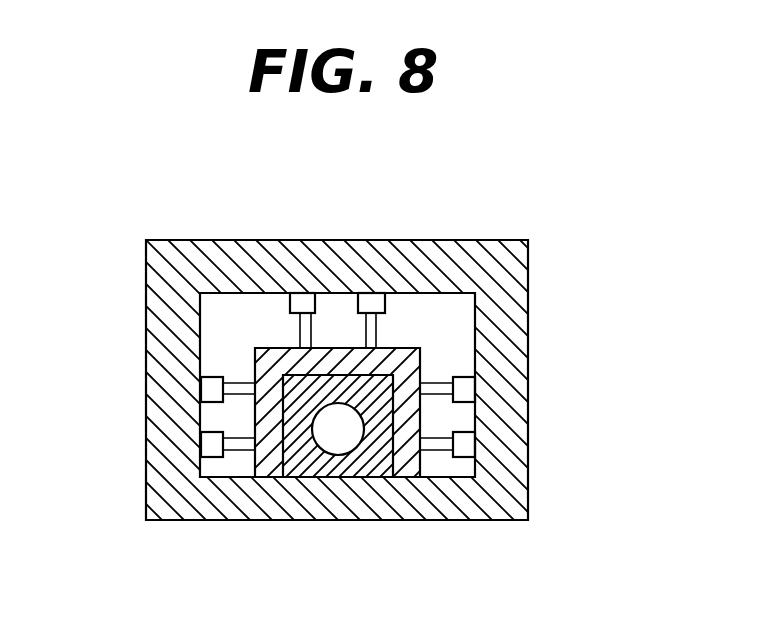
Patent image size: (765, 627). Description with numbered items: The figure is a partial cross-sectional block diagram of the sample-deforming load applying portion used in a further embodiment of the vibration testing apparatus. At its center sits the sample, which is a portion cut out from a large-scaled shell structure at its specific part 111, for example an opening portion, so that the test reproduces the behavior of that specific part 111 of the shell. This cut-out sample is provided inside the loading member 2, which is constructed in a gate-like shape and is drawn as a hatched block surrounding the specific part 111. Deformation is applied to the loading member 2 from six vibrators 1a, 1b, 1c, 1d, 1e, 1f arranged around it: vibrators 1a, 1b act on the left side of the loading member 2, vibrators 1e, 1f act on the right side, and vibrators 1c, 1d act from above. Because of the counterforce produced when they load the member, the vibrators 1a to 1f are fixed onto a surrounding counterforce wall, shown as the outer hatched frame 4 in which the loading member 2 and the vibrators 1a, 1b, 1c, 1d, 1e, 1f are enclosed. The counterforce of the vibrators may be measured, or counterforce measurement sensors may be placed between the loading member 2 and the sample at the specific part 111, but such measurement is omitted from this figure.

The package housing 4 is at (512, 260).
The loading member 2 is at (262, 352).
The specific part 111 is at (339, 455).
The vibrator 1a is at (203, 447).
The vibrator 1b is at (203, 392).
The vibrator 1c is at (303, 297).
The vibrator 1d is at (373, 297).
The vibrator 1e is at (477, 387).
The vibrator 1f is at (477, 442).